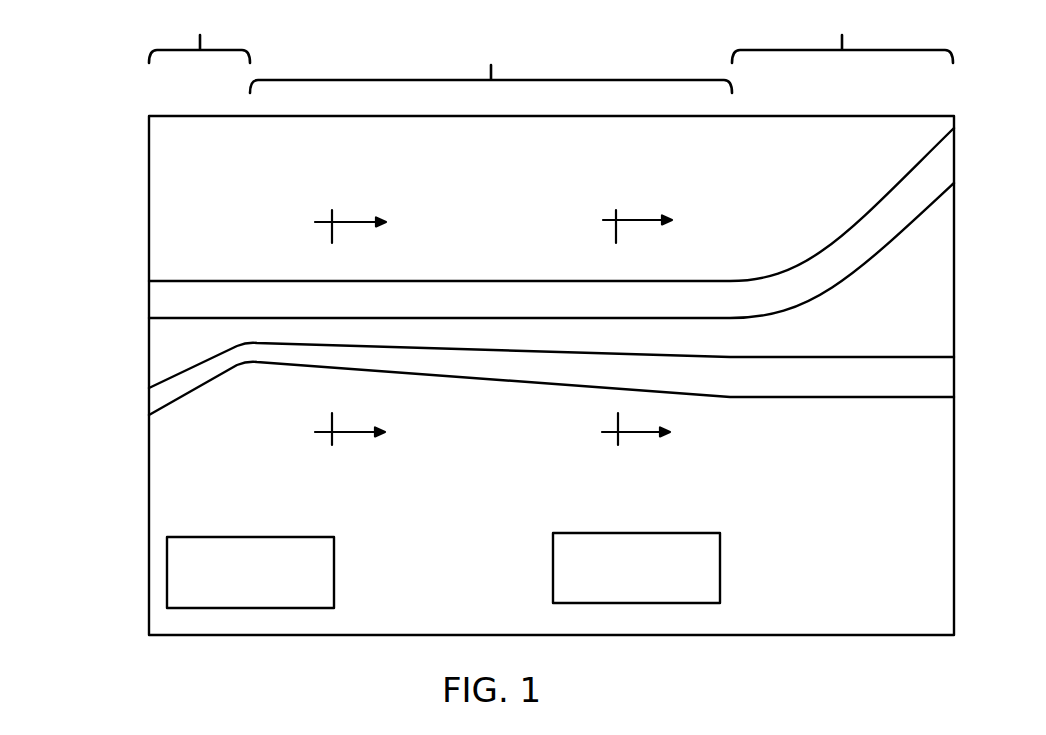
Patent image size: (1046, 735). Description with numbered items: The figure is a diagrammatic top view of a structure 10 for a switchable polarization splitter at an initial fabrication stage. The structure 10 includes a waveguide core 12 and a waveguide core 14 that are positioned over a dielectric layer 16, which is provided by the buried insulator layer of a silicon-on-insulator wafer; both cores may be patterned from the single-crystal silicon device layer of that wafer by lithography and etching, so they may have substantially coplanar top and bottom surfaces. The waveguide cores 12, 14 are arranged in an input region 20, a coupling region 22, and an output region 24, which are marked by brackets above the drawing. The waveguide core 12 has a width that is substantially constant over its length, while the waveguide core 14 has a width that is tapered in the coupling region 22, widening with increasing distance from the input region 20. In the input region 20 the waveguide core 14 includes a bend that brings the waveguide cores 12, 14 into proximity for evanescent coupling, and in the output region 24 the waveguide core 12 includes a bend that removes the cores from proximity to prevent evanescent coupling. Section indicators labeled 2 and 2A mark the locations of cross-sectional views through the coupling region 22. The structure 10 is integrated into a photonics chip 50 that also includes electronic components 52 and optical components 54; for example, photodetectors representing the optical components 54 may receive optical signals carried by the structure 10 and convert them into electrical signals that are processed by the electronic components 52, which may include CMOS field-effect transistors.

The structure 10 is at (551, 305).
The waveguide core 12 is at (247, 297).
The waveguide core 14 is at (770, 375).
The dielectric layer 16 is at (165, 470).
The input region 20 is at (199, 31).
The coupling region 22 is at (491, 61).
The output region 24 is at (842, 31).
The photonics chip 50 is at (498, 341).
The electronic components 52 is at (720, 575).
The optical components 54 is at (334, 580).
The cross-section line 2 is at (365, 331).
The cross-section line 2A is at (659, 331).